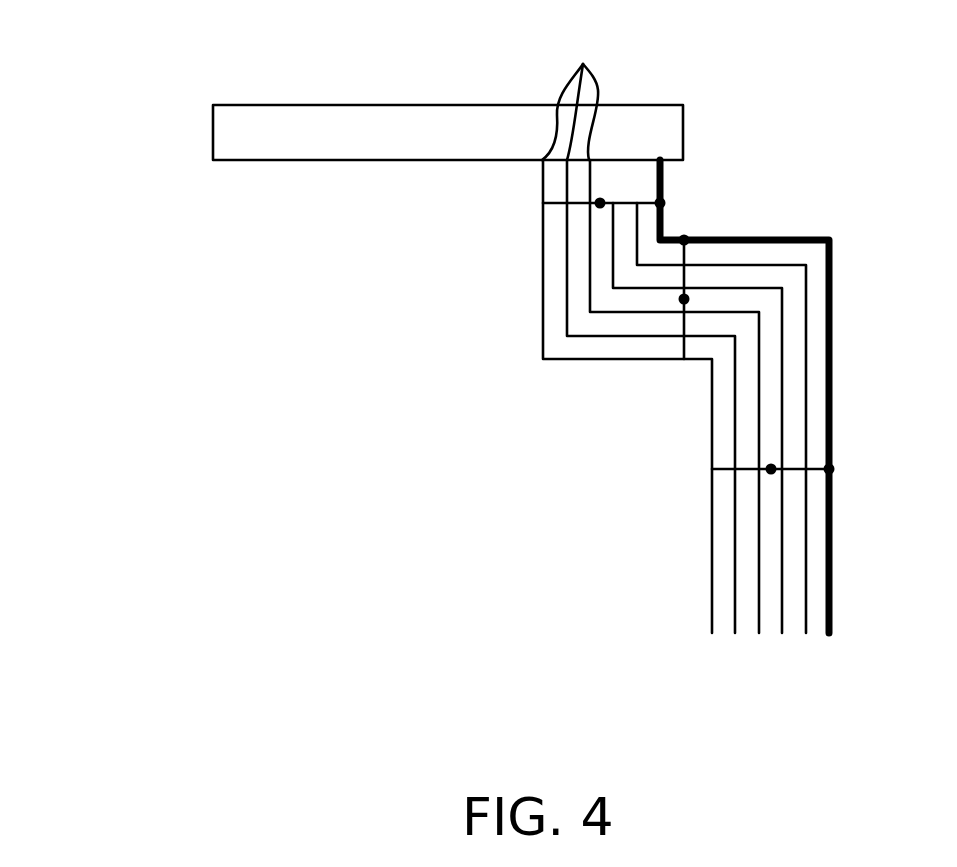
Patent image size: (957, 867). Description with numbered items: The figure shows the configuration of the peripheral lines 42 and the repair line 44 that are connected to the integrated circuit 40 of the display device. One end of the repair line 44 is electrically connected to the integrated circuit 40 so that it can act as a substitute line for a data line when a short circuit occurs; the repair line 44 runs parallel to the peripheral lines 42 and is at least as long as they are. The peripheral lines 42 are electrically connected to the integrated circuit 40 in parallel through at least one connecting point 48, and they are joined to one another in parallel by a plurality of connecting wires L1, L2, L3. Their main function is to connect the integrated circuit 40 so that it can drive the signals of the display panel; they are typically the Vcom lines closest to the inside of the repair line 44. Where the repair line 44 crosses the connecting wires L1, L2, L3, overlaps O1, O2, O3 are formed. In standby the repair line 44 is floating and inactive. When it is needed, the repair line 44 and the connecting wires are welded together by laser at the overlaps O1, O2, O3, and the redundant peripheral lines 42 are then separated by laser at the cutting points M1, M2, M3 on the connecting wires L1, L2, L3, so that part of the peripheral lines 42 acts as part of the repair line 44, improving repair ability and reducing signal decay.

The integrated circuit 40 is at (228, 127).
The peripheral lines 42 is at (806, 645).
The repair line 44 is at (831, 303).
The connecting point 48 is at (579, 81).
The connecting wire L1 is at (555, 203).
The connecting wire L2 is at (690, 358).
The connecting wire L3 is at (723, 470).
The cutting point M1 is at (600, 203).
The cutting point M2 is at (684, 299).
The cutting point M3 is at (771, 469).
The overlap O1 is at (665, 203).
The overlap O2 is at (684, 240).
The overlap O3 is at (831, 469).